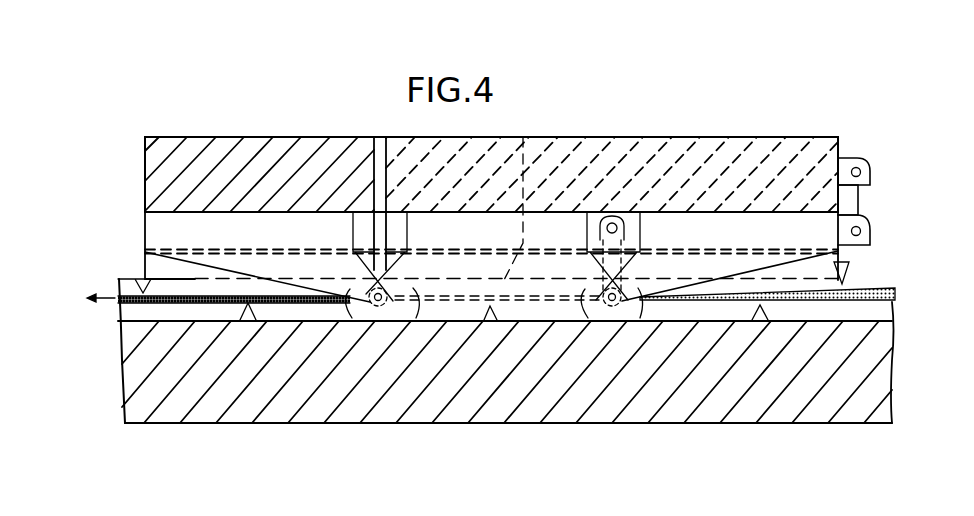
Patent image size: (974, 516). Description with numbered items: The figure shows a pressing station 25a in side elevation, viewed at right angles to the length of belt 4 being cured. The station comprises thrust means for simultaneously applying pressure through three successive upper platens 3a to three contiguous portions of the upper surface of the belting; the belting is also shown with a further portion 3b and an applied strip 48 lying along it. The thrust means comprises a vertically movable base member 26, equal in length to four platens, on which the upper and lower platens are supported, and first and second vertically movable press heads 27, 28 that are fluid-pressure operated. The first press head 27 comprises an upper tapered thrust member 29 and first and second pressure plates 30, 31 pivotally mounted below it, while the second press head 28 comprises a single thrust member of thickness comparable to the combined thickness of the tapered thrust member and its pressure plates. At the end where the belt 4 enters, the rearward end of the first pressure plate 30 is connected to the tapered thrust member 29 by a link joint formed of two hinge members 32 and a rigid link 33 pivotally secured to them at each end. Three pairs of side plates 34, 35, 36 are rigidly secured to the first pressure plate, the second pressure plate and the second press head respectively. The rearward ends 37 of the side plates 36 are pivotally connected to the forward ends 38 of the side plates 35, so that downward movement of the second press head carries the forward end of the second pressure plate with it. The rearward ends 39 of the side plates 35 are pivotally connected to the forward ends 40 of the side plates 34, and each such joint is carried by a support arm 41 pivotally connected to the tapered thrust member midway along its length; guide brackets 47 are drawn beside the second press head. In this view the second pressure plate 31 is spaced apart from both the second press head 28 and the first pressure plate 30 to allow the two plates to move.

The pressing station 25a is at (243, 127).
The second press head 28 is at (308, 143).
The first press head 27 is at (686, 142).
The second pressure plate 31 is at (525, 136).
The upper tapered thrust member 29 is at (615, 222).
The support arm 41 is at (594, 250).
The hinge members 32 is at (849, 170).
The rigid link 33 is at (858, 198).
The side plates of the second press head 36 is at (239, 238).
The side plates of the second pressure plate 35 is at (491, 257).
The side plates of the first pressure plate 34 is at (729, 238).
The nozzle guide brackets 47 is at (353, 250).
The rearward ends of the side plates of the second press head 37 is at (342, 300).
The forward ends of the side plates of the second pressure plate 38 is at (418, 300).
The rearward ends of the side plates of the second pressure plate 39 is at (583, 292).
The forward ends of the side plates of the first pressure plate 40 is at (640, 303).
The upper platens 3a is at (180, 288).
The sheet portion 3b is at (807, 308).
The first pressure plate 30 is at (896, 290).
The applied strip 48 is at (252, 306).
The belt 4 is at (870, 305).
The base member 26 is at (130, 385).